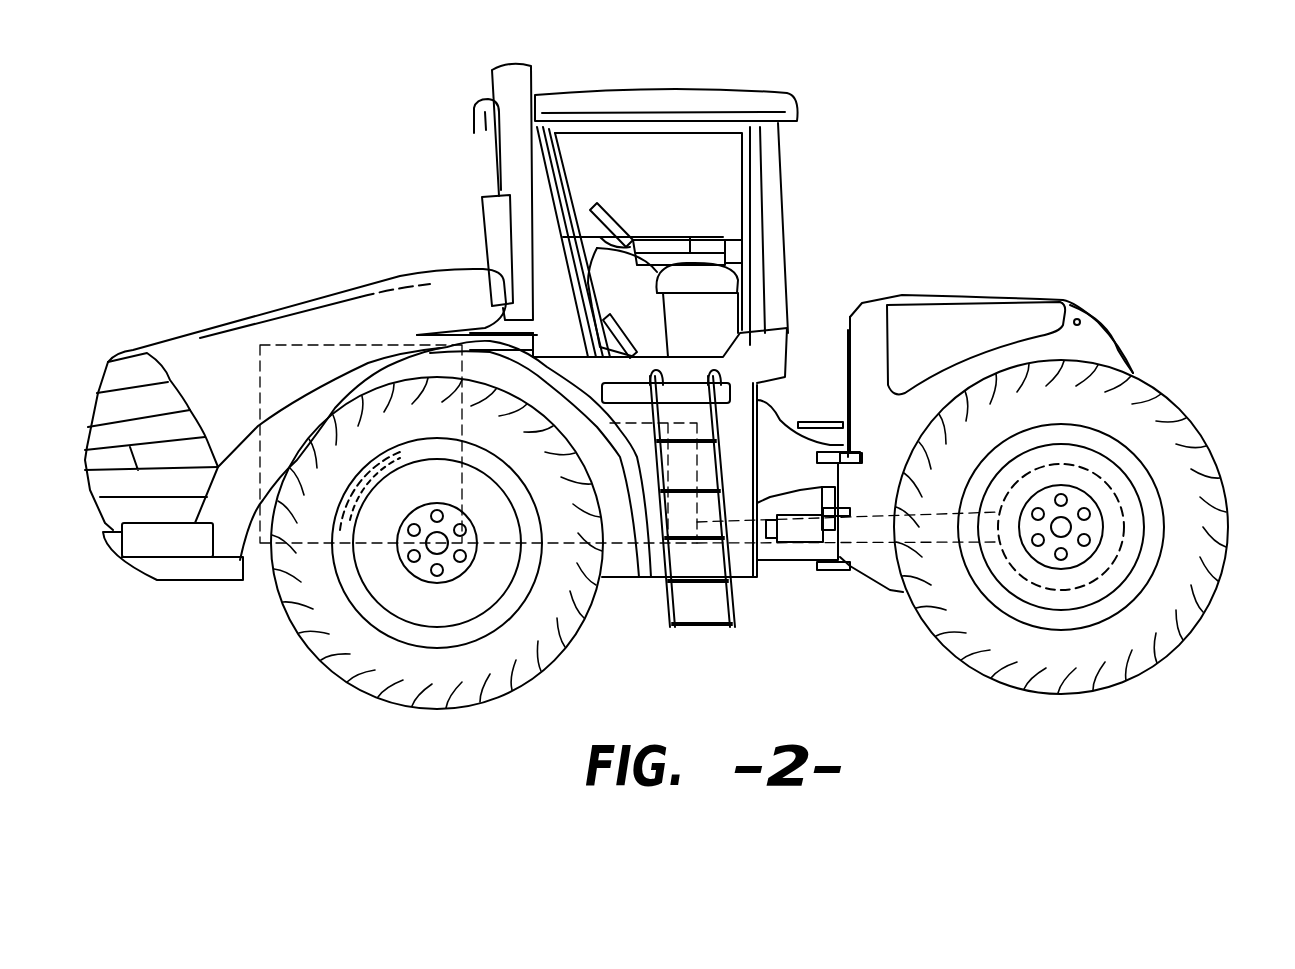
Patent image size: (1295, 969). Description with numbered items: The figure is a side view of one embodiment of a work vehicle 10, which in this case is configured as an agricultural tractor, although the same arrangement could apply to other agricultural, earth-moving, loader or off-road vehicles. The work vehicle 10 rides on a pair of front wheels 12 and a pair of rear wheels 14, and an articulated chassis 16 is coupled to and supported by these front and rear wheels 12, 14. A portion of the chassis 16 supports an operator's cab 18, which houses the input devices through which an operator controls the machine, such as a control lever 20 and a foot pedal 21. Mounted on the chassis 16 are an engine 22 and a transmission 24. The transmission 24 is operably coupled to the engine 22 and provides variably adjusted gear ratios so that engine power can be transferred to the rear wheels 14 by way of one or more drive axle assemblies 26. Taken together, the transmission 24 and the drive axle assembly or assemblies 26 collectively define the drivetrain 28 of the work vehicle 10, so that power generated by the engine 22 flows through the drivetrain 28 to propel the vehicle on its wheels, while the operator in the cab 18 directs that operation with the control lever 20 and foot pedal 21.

The work vehicle 10 is at (276, 194).
The front wheels 12 is at (280, 602).
The rear wheels 14 is at (1230, 535).
The articulated chassis 16 is at (742, 578).
The operator's cab 18 is at (788, 230).
The control lever 20 is at (647, 233).
The foot pedal 21 is at (620, 328).
The engine 22 is at (302, 347).
The transmission 24 is at (583, 630).
The drive axle assemblies 26 is at (1113, 483).
The drivetrain 28 is at (450, 302).